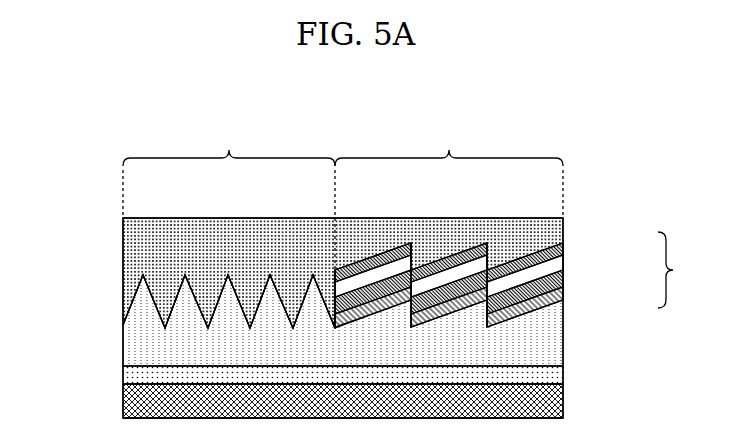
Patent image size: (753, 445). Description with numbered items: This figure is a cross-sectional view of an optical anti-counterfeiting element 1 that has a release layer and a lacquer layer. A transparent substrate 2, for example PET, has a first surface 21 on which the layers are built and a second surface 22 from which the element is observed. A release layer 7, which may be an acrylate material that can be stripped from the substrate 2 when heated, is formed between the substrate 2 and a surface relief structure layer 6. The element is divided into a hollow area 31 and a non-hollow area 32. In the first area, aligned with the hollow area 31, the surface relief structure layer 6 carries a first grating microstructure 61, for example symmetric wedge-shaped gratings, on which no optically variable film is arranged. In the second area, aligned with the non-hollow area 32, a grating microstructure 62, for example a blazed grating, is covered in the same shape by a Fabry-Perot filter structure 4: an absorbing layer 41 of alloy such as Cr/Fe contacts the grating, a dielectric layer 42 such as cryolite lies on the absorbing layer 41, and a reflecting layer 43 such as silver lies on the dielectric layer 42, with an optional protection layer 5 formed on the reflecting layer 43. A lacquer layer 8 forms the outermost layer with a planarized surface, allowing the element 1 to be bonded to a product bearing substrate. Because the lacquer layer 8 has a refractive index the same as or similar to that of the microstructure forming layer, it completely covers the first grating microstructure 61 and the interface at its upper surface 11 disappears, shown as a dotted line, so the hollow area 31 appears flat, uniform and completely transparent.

The optical anti-counterfeiting element 1 is at (62, 315).
The substrate 2 is at (546, 407).
The first surface 21 is at (120, 382).
The second surface 22 is at (120, 418).
The hollow area 31 is at (229, 159).
The non-hollow area 32 is at (449, 215).
The Fabry-Perot filter structure 4 is at (513, 279).
The absorbing layer 41 is at (556, 302).
The dielectric layer 42 is at (556, 277).
The reflecting layer 43 is at (554, 263).
The protection layer 5 is at (556, 245).
The surface relief structure layer 6 is at (538, 350).
The first grating microstructure 61 is at (138, 323).
The grating microstructure 62 is at (541, 320).
The release layer 7 is at (546, 373).
The lacquer layer 8 is at (140, 240).
The upper surface 11 is at (123, 312).